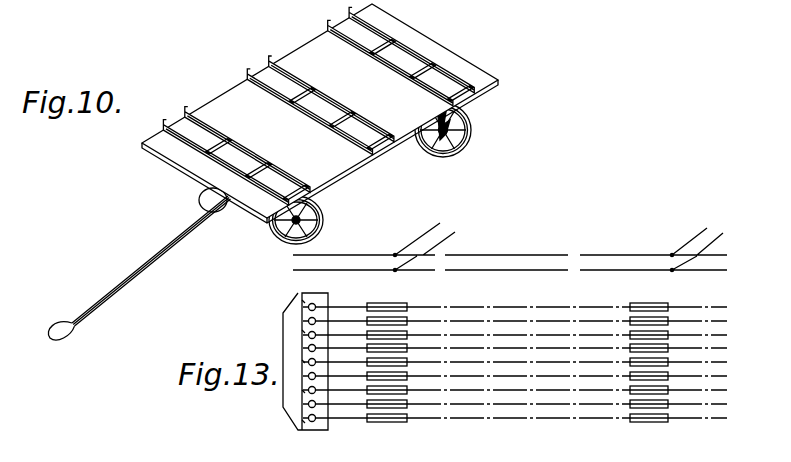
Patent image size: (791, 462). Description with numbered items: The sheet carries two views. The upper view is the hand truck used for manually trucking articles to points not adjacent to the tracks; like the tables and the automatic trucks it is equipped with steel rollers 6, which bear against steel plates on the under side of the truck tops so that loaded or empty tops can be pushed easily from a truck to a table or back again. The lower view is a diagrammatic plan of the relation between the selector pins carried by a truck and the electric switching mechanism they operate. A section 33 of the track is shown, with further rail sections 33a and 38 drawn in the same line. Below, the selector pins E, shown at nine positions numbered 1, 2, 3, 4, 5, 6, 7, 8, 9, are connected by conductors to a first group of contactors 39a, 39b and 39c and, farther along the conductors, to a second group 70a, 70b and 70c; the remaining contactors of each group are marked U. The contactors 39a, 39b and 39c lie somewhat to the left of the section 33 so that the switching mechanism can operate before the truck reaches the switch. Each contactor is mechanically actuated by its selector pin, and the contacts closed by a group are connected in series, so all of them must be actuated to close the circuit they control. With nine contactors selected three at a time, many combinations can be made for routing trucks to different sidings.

In FIG. 10, the steel rollers 6 is at (449, 42).
In FIG. 13, the steel rollers 6 is at (335, 376).
In FIG. 13, the section of the track 33 is at (374, 247).
In FIG. 13, the track rail section 33a is at (506, 252).
In FIG. 13, the track rail section 38 is at (653, 250).
In FIG. 13, the contactor 39a is at (406, 303).
In FIG. 13, the contactor 39b is at (408, 321).
In FIG. 13, the contactor 39c is at (410, 335).
In FIG. 13, the coupling on conductor 1 70a is at (670, 305).
In FIG. 13, the coupling on conductor 2 70b is at (670, 319).
In FIG. 13, the coupling on conductor 3 70c is at (671, 346).
In FIG. 13, the couplings on conductors 4-9 U is at (400, 418).
In FIG. 13, the selector pins E is at (305, 361).
In FIG. 13, the terminal 1 is at (335, 307).
In FIG. 13, the steel plates 2 is at (335, 321).
In FIG. 13, the steel flange 3 is at (335, 335).
In FIG. 13, the oak boards 4 is at (335, 348).
In FIG. 13, the terminal 5 is at (335, 362).
In FIG. 13, the terminal 7 is at (335, 390).
In FIG. 13, the terminal 8 is at (335, 404).
In FIG. 13, the terminal 9 is at (335, 418).